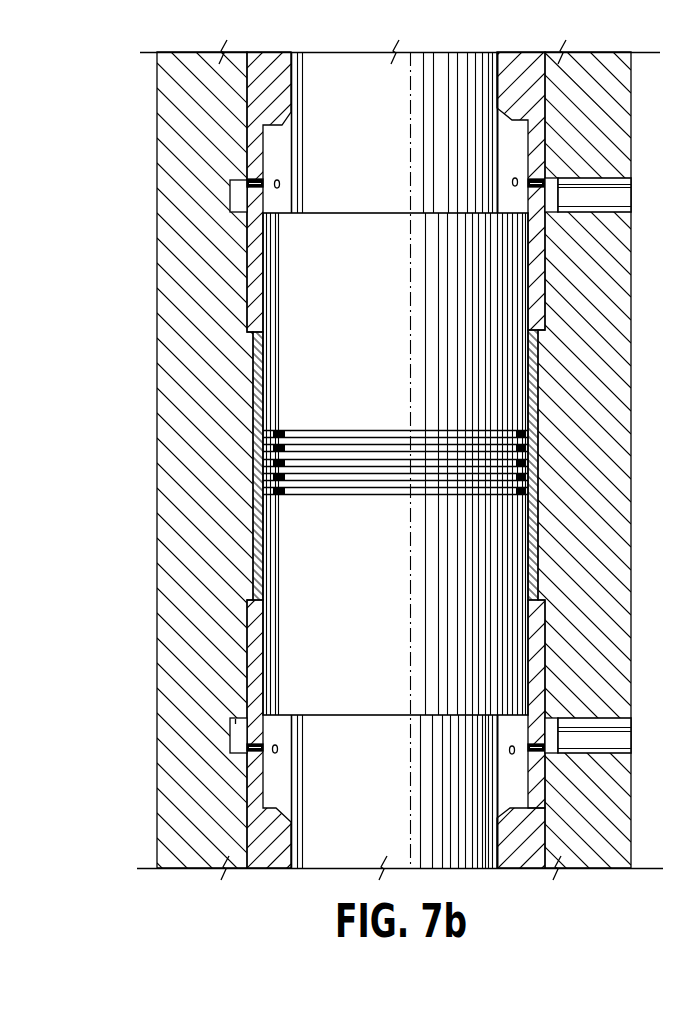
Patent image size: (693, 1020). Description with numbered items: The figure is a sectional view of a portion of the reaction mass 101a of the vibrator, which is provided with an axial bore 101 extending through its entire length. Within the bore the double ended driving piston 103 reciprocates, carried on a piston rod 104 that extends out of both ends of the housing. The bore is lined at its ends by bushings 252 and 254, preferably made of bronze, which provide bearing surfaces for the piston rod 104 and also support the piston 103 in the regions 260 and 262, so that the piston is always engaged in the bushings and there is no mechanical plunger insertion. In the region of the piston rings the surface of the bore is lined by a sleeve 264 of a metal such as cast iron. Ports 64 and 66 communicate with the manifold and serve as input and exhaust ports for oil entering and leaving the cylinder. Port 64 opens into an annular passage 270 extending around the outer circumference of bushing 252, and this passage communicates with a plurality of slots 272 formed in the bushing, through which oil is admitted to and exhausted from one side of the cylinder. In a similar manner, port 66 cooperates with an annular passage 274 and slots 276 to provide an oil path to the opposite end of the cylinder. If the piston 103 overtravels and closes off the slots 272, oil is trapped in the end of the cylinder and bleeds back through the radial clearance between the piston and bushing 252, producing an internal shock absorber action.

The reaction mass 101a is at (157, 512).
The cylindrical bore 101 is at (508, 140).
The driving piston 103 is at (415, 314).
The piston rod 104 is at (408, 122).
The bushing 252 is at (516, 54).
The bushing 254 is at (506, 839).
The piston support region 260 is at (538, 256).
The piston support region 262 is at (535, 627).
The sleeve 264 is at (531, 528).
The annular passage 270 is at (240, 188).
The slots 272 is at (280, 181).
The annular passage 274 is at (236, 716).
The slots 276 is at (278, 748).
The port 64 is at (636, 192).
The port 66 is at (628, 741).